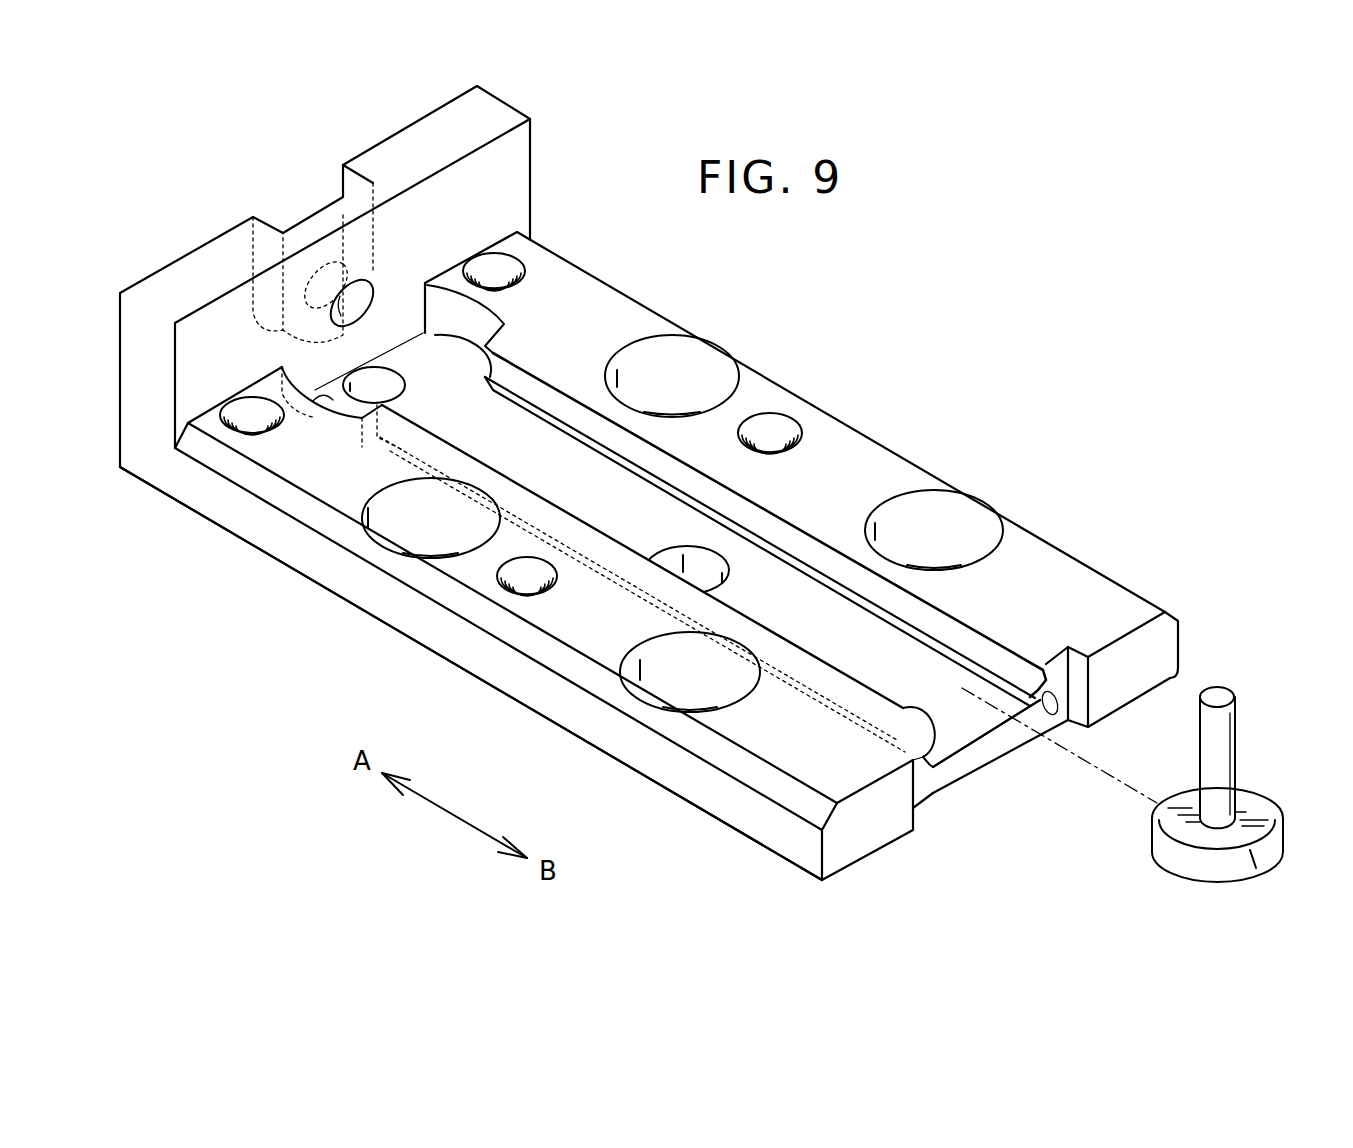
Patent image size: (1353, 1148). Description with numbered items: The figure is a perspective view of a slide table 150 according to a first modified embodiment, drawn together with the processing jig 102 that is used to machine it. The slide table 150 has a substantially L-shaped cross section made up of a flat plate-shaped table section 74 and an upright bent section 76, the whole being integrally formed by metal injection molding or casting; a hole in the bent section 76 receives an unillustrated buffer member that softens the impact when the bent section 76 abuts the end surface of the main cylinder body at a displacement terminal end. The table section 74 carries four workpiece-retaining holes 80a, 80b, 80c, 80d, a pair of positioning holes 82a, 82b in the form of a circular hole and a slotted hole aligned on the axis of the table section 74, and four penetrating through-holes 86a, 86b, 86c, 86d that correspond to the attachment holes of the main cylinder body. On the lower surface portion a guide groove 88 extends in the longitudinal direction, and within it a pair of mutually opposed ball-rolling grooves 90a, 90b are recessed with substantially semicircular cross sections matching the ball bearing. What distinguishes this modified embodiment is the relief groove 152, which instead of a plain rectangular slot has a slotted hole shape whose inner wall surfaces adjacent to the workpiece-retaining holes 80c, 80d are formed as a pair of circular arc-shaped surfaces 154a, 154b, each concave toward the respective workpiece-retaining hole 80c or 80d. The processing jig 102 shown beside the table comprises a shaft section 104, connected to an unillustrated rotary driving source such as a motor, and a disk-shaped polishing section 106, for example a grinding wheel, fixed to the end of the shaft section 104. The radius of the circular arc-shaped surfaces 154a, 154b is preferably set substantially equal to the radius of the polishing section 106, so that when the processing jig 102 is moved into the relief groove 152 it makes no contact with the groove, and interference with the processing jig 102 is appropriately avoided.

The table section 74 is at (1080, 612).
The bent section 76 is at (423, 134).
The workpiece-retaining hole 80a is at (782, 427).
The workpiece-retaining hole 80b is at (527, 585).
The workpiece-retaining hole 80c is at (497, 262).
The workpiece-retaining hole 80d is at (253, 418).
The positioning hole 82a is at (387, 380).
The positioning hole 82b is at (675, 556).
The penetrating through-hole 86a is at (923, 513).
The penetrating through-hole 86b is at (697, 678).
The penetrating through-hole 86c is at (670, 363).
The penetrating through-hole 86d is at (418, 530).
The guide groove 88 is at (970, 731).
The ball-rolling groove 90a is at (987, 650).
The ball-rolling groove 90b is at (882, 727).
The processing jig 102 is at (1178, 817).
The shaft section 104 is at (1207, 735).
The polishing section 106 is at (1163, 858).
The slide table 150 is at (322, 592).
The relief groove 152 is at (415, 350).
The circular arc-shaped surface 154a is at (472, 312).
The circular arc-shaped surface 154b is at (323, 395).